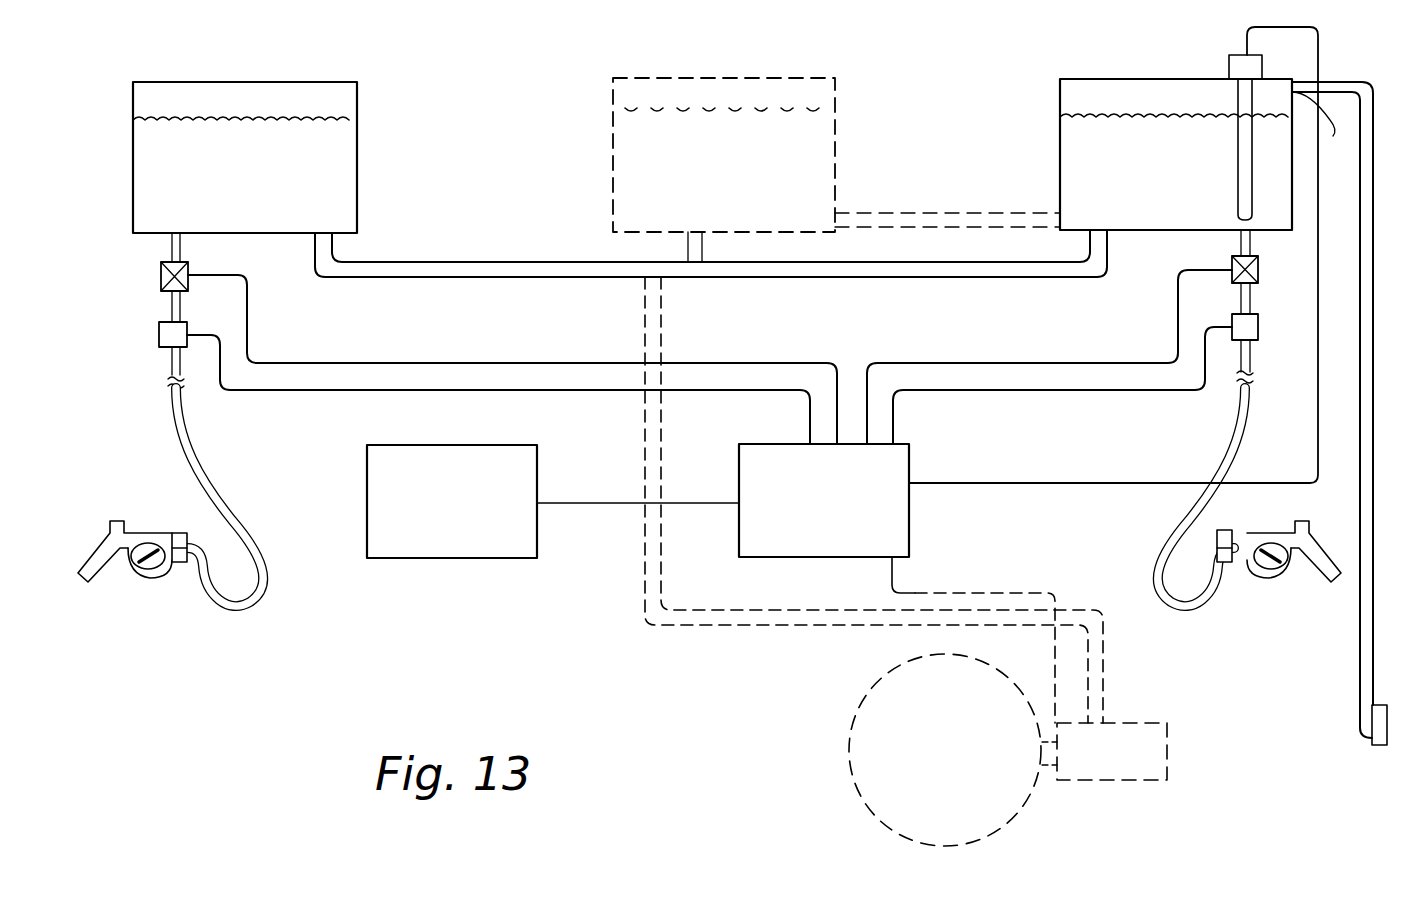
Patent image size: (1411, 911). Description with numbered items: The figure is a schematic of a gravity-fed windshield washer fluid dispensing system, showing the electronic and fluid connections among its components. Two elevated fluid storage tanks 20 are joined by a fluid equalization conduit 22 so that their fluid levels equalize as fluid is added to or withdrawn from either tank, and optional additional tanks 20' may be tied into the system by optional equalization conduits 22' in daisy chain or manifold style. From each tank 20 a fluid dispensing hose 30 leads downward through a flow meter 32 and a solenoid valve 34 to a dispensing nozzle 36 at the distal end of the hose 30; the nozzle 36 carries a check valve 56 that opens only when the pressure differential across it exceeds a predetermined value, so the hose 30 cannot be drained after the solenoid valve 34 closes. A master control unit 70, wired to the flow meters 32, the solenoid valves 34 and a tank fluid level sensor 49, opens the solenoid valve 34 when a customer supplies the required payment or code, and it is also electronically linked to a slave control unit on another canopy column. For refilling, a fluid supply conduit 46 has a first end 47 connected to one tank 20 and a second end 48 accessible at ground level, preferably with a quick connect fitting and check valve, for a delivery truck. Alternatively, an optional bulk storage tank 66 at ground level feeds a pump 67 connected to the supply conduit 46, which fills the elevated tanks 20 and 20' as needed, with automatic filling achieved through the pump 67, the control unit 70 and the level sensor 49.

The elevated fluid storage tank 20 is at (712, 156).
The optional additional tank 20' is at (750, 155).
The fluid equalization conduit 22 is at (711, 274).
The optional equalization conduit 22' is at (812, 219).
The fluid dispensing hose 30 is at (185, 432).
The flow meter 32 is at (161, 281).
The solenoid valve 34 is at (159, 337).
The dispensing nozzle 36 is at (148, 531).
The fluid supply conduit 46 is at (1374, 392).
The first end of supply conduit 47 is at (1324, 129).
The second end of supply conduit 48 is at (1378, 748).
The fluid level sensor 49 is at (1229, 68).
The check valve 56 is at (178, 565).
The bulk storage tank 66 is at (878, 675).
The pump 67 is at (1105, 782).
The master control unit 70 is at (796, 583).